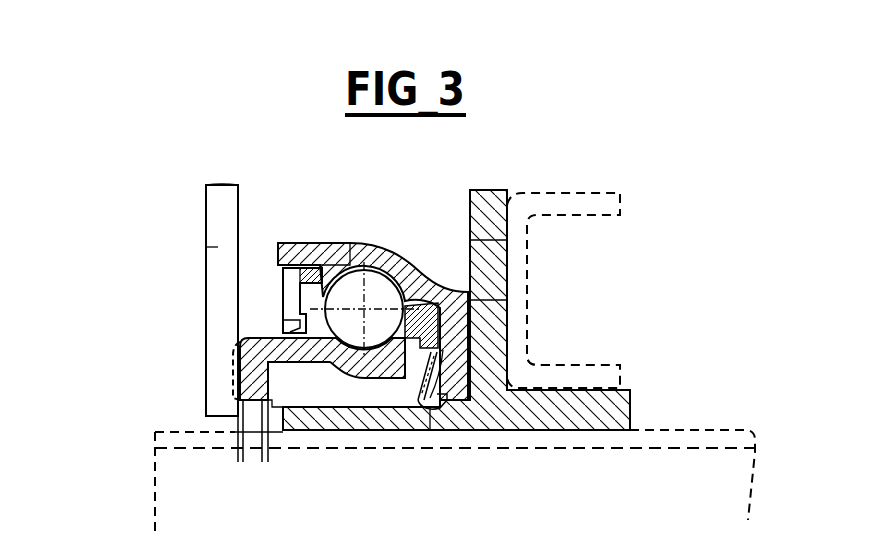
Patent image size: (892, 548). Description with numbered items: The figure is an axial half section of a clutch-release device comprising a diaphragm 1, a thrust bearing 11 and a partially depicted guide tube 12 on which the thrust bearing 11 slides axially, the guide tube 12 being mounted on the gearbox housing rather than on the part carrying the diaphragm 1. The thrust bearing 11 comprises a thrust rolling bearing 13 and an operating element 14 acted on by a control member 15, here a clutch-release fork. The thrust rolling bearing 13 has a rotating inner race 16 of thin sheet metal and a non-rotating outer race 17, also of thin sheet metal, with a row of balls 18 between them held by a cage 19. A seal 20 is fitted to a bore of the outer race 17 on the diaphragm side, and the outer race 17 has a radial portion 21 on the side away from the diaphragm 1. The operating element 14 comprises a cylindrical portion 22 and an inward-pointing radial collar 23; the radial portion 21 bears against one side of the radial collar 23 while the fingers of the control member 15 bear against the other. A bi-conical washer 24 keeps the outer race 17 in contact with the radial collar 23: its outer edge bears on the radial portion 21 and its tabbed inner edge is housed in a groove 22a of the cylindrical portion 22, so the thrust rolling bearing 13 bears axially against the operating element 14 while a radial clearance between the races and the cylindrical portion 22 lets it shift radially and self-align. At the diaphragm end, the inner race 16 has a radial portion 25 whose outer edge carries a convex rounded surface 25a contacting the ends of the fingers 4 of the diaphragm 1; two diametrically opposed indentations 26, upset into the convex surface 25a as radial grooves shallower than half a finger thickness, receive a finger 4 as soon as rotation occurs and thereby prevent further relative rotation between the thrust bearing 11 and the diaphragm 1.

The diaphragm 1 is at (200, 208).
The fingers 4 is at (217, 247).
The thrust bearing 11 is at (472, 162).
The guide tube 12 is at (698, 440).
The thrust rolling bearing 13 is at (370, 236).
The operating element 14 is at (500, 188).
The control member 15 is at (611, 192).
The inner race 16 is at (303, 352).
The outer race 17 is at (313, 252).
The balls 18 is at (388, 323).
The cage 19 is at (415, 398).
The seal 20 is at (281, 298).
The radial portion 21 is at (465, 350).
The cylindrical portion 22 is at (348, 415).
The groove 22a is at (445, 405).
The radial collar 23 is at (487, 213).
The bi-conical washer 24 is at (432, 392).
The radial portion 25 is at (250, 436).
The convex rounded surface 25a is at (233, 421).
The indentations 26 is at (231, 372).